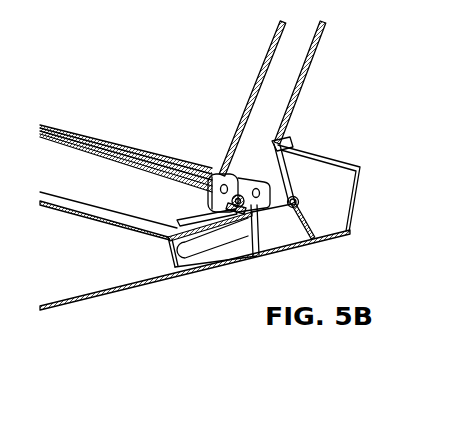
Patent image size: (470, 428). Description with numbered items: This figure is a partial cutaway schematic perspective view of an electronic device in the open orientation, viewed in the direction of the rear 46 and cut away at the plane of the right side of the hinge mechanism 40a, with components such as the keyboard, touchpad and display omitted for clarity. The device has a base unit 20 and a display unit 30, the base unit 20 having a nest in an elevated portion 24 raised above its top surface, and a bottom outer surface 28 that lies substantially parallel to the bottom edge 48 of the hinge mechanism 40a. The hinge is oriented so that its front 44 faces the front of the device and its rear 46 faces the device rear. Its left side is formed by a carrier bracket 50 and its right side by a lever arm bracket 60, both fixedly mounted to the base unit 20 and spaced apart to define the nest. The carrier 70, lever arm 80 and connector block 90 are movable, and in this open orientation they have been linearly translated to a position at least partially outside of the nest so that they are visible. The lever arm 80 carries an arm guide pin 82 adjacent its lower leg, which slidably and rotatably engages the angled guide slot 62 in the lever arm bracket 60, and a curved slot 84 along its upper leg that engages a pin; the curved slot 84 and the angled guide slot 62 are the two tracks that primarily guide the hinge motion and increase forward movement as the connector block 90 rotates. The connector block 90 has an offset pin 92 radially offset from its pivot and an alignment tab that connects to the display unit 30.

The base unit 20 is at (88, 303).
The elevated portion 24 is at (287, 140).
The bottom outer surface 28 is at (110, 303).
The display unit 30 is at (315, 50).
The hinge mechanism 40a is at (372, 270).
The front of the hinge mechanism 44 is at (145, 258).
The rear of the hinge mechanism 46 is at (345, 198).
The bottom edge of the hinge mechanism 48 is at (245, 262).
The carrier bracket 50 is at (173, 262).
The lever arm bracket 60 is at (335, 208).
The angled guide slot 62 is at (302, 228).
The carrier 70 is at (213, 243).
The lever arm 80 is at (268, 192).
The arm guide pin 82 is at (296, 199).
The curved slot 84 is at (237, 203).
The connector block 90 is at (217, 192).
The offset pin 92 is at (227, 207).